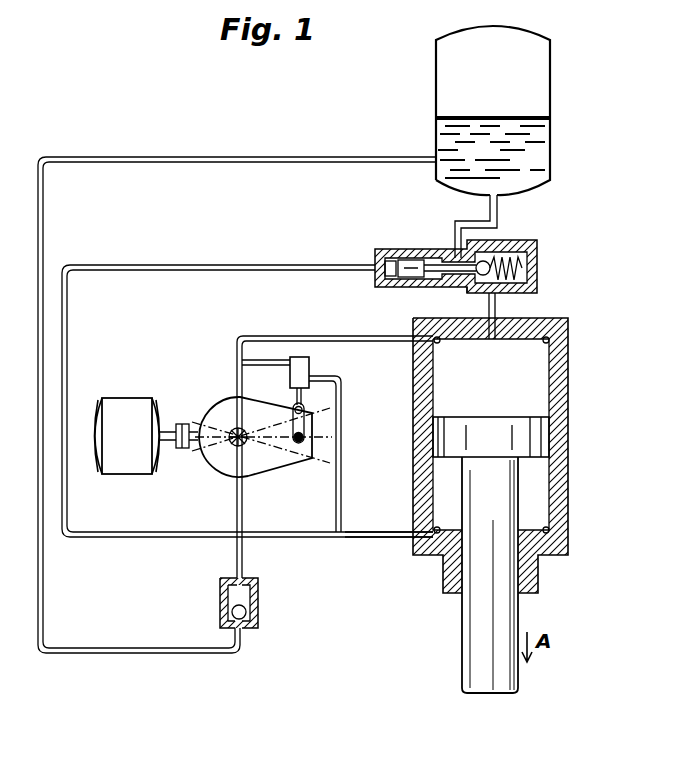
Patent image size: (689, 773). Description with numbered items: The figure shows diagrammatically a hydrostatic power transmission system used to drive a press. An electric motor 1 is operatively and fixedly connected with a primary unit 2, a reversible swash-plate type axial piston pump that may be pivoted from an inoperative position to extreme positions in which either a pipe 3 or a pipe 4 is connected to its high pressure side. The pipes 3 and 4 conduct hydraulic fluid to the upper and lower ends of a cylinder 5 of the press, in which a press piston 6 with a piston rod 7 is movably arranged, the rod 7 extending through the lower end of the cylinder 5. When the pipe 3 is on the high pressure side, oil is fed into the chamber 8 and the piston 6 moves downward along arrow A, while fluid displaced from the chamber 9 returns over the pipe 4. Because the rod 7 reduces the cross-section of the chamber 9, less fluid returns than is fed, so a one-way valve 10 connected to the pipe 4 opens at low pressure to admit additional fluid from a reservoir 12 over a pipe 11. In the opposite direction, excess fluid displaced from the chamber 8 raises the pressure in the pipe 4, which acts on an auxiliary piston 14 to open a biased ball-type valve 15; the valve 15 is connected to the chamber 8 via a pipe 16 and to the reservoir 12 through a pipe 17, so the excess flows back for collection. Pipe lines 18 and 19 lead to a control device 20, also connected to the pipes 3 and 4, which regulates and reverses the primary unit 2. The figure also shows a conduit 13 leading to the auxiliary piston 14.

The electric motor 1 is at (130, 471).
The primary unit 2 is at (265, 471).
The pipe 3 is at (338, 325).
The pipe 4 is at (381, 537).
The cylinder 5 is at (568, 353).
The press piston 6 is at (502, 432).
The piston rod 7 is at (465, 650).
The chamber 8 is at (452, 376).
The chamber 9 is at (537, 479).
The one-way valve 10 is at (222, 592).
The pipe 11 is at (156, 655).
The reservoir 12 is at (550, 134).
The control conduit 13 is at (66, 312).
The auxiliary piston 14 is at (409, 262).
The ball-type valve 15 is at (472, 290).
The pipe 16 is at (496, 305).
The pipe 17 is at (455, 220).
The pipe line 18 is at (266, 376).
The pipe line 19 is at (343, 476).
The control device 20 is at (309, 370).